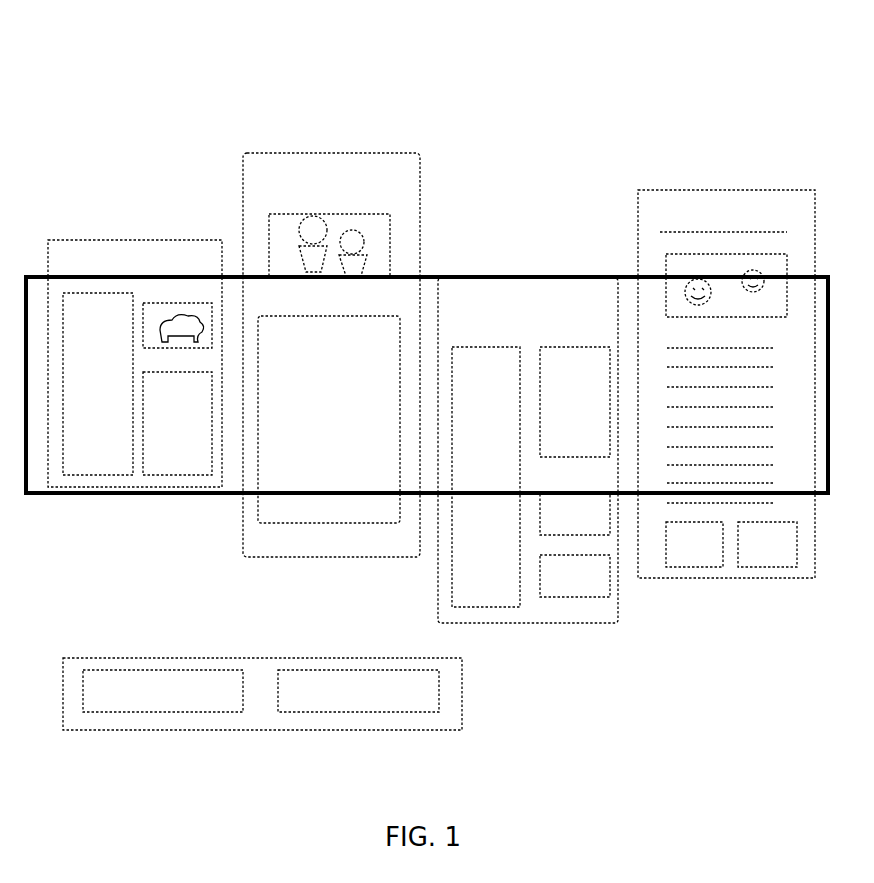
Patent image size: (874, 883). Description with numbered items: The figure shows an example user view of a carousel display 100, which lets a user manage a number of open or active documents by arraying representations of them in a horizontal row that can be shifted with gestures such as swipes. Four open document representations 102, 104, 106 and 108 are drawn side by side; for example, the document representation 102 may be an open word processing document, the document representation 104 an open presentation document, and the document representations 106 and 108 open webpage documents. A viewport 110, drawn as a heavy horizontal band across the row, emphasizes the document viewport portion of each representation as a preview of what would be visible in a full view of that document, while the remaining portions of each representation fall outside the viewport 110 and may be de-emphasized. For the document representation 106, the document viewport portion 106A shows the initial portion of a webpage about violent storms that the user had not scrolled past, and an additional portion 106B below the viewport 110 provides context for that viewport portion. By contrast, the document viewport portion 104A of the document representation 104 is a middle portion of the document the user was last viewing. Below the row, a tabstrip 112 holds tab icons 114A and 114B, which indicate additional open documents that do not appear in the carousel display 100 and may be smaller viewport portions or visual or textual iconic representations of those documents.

The carousel display 100 is at (124, 80).
The document representation 102 is at (142, 236).
The document representation 104 is at (331, 147).
The document viewport portion 104A is at (390, 312).
The document representation 106 is at (530, 248).
The document viewport portion 106A is at (593, 303).
The additional portion 106B is at (528, 568).
The document representation 108 is at (748, 162).
The viewport 110 is at (26, 277).
The tabstrip 112 is at (177, 656).
The tab icon 114A is at (163, 691).
The tab icon 114B is at (358, 691).